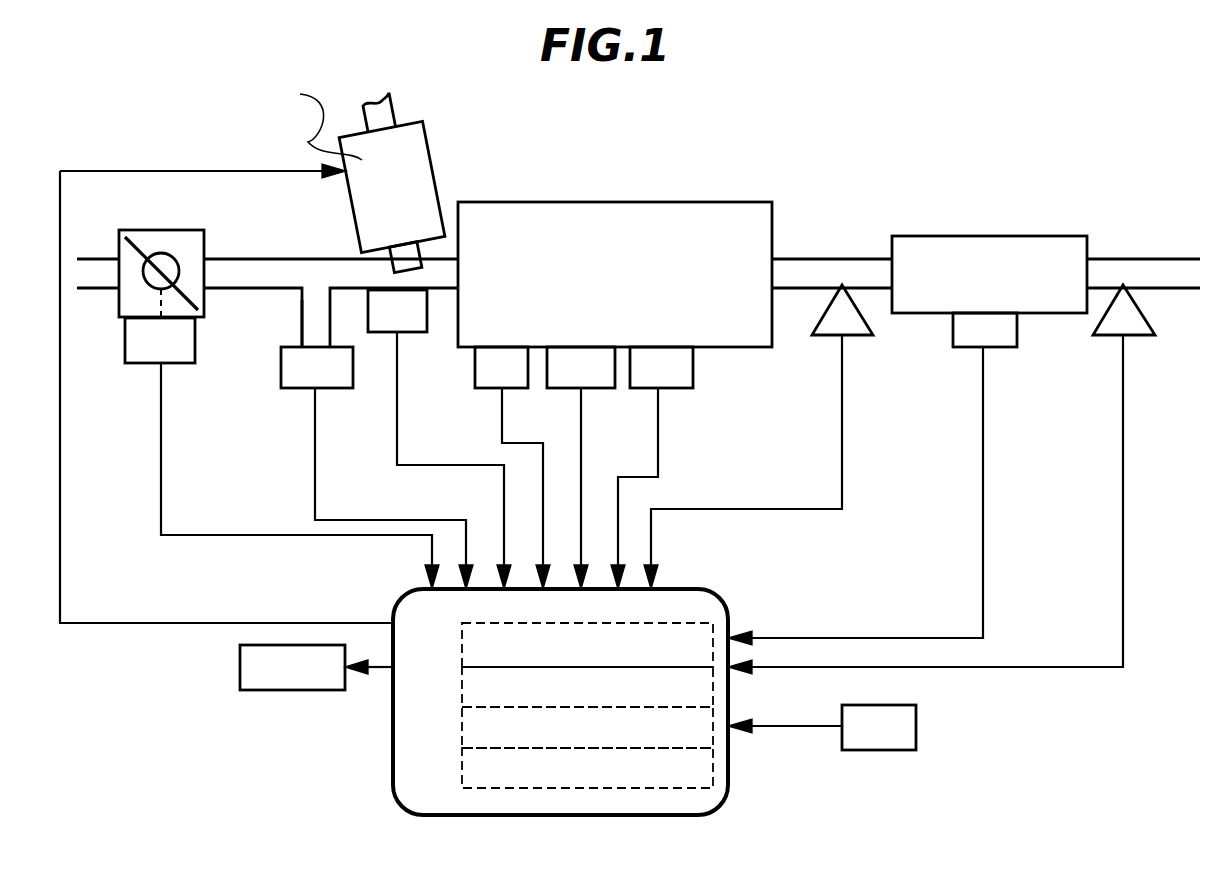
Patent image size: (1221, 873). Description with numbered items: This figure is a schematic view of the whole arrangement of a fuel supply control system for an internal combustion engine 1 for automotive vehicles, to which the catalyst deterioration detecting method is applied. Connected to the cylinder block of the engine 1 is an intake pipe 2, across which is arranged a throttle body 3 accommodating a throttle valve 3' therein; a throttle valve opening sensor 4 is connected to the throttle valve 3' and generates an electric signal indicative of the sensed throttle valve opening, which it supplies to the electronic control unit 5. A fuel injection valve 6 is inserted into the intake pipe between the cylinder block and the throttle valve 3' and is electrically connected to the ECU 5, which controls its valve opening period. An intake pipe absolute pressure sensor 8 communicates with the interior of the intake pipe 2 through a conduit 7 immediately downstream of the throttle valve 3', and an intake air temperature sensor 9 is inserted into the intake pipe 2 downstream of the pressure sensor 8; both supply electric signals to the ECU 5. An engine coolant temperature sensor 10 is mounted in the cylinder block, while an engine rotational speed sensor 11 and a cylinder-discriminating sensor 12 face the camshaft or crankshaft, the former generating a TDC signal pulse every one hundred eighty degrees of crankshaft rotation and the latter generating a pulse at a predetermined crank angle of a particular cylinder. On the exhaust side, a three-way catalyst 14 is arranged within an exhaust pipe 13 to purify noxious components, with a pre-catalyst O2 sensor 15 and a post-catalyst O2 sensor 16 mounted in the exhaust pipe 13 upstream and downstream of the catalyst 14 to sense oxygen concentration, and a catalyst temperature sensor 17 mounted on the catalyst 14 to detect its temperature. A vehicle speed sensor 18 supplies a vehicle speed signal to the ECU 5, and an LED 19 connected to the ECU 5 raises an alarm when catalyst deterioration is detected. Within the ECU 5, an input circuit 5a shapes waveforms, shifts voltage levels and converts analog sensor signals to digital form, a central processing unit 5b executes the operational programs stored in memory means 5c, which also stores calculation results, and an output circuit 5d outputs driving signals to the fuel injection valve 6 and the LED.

The internal combustion engine 1 is at (733, 205).
The intake pipe 2 is at (255, 290).
The throttle body 3 is at (143, 252).
The throttle valve 3' is at (163, 248).
The throttle valve opening sensor 4 is at (187, 365).
The electronic control unit 5 is at (439, 493).
The input circuit 5a is at (732, 625).
The central processing unit 5b is at (732, 682).
The memory means 5c is at (732, 730).
The output circuit 5d is at (732, 772).
The fuel injection valve 6 is at (433, 157).
The conduit 7 is at (300, 333).
The intake pipe absolute pressure sensor 8 is at (330, 390).
The intake air temperature sensor 9 is at (408, 333).
The engine coolant temperature sensor 10 is at (510, 390).
The engine rotational speed sensor 11 is at (587, 390).
The cylinder-discriminating sensor 12 is at (665, 390).
The exhaust pipe 13 is at (837, 259).
The three-way catalyst 14 is at (962, 236).
The pre-catalyst O2 sensor 15 is at (858, 337).
The post-catalyst O2 sensor 16 is at (1140, 337).
The catalyst temperature sensor 17 is at (1007, 348).
The vehicle speed sensor 18 is at (916, 722).
The LED 19 is at (240, 677).